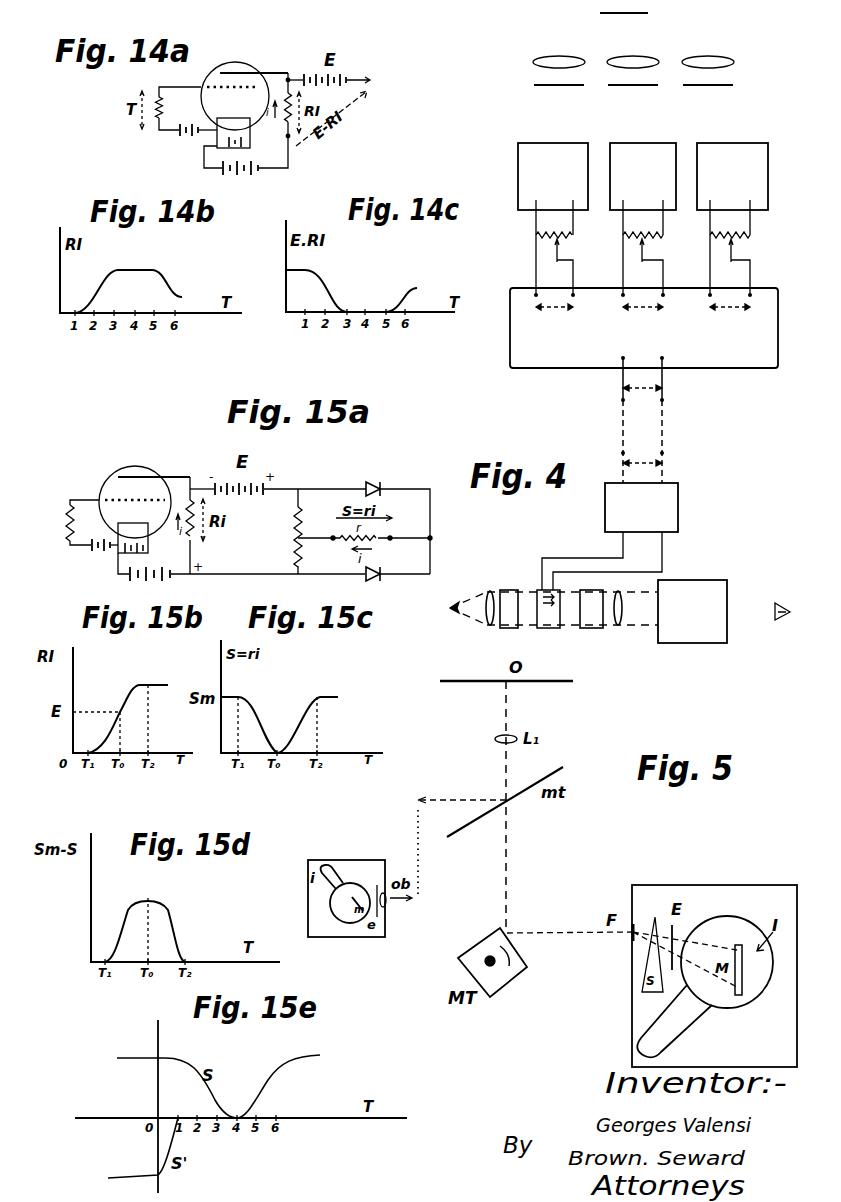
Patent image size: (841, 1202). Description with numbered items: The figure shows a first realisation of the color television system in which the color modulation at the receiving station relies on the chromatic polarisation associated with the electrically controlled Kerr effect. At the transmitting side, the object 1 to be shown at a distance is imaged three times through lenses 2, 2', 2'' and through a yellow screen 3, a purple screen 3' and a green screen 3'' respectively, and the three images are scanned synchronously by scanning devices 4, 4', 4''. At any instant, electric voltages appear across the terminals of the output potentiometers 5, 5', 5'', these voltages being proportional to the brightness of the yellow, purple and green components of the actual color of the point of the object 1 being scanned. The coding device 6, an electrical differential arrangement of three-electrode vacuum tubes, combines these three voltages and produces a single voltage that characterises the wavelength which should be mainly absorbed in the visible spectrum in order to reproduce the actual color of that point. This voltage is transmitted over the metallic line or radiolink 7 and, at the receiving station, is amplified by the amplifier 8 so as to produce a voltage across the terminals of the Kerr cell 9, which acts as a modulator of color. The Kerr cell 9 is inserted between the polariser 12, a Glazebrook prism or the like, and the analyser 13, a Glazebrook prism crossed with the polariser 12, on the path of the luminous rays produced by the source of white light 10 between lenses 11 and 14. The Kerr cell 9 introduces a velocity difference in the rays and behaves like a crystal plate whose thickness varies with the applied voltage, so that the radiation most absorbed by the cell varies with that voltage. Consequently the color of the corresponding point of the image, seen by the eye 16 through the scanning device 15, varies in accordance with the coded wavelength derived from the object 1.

The object 1 is at (630, 15).
The lens 2 is at (559, 53).
The lens 2' is at (633, 53).
The lens 2'' is at (708, 52).
The yellow screen 3 is at (559, 98).
The purple screen 3' is at (633, 98).
The green screen 3'' is at (708, 98).
The scanning device 4 is at (553, 176).
The scanning device 4' is at (643, 176).
The scanning device 4'' is at (732, 176).
The output potentiometer 5 is at (554, 247).
The output potentiometer 5' is at (643, 247).
The output potentiometer 5'' is at (730, 247).
The coding device 6 is at (774, 342).
The metallic line or radiolink 7 is at (673, 428).
The amplifier 8 is at (668, 518).
The Kerr cell 9 is at (548, 623).
The source of white light 10 is at (550, 614).
The lens 11 is at (487, 621).
The polariser 12 is at (511, 621).
The analyser 13 is at (591, 623).
The lens 14 is at (620, 623).
The scanning device 15 is at (692, 611).
The eye 16 is at (792, 619).